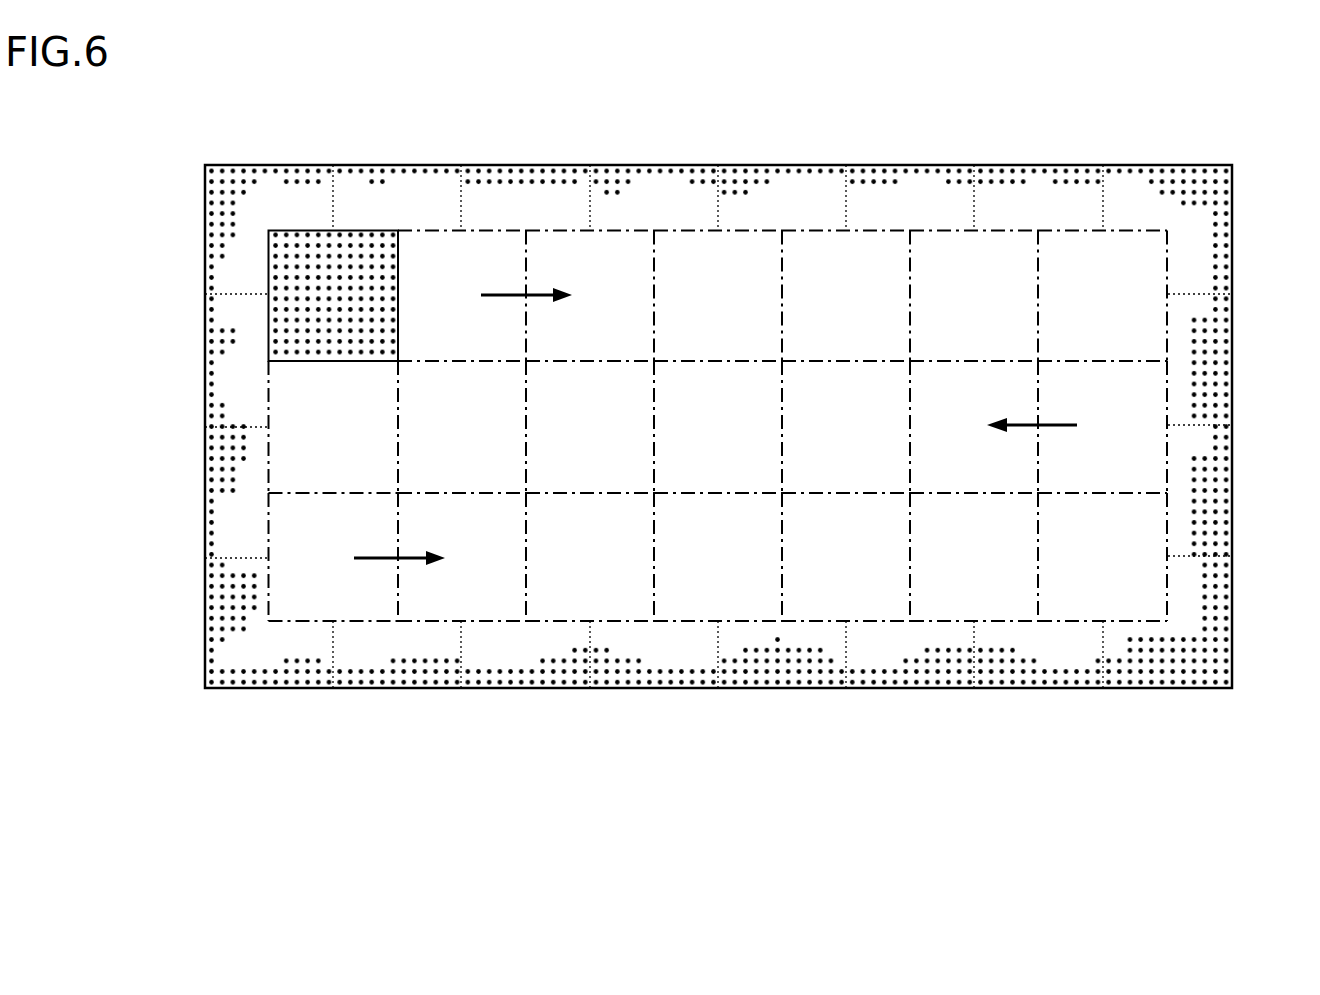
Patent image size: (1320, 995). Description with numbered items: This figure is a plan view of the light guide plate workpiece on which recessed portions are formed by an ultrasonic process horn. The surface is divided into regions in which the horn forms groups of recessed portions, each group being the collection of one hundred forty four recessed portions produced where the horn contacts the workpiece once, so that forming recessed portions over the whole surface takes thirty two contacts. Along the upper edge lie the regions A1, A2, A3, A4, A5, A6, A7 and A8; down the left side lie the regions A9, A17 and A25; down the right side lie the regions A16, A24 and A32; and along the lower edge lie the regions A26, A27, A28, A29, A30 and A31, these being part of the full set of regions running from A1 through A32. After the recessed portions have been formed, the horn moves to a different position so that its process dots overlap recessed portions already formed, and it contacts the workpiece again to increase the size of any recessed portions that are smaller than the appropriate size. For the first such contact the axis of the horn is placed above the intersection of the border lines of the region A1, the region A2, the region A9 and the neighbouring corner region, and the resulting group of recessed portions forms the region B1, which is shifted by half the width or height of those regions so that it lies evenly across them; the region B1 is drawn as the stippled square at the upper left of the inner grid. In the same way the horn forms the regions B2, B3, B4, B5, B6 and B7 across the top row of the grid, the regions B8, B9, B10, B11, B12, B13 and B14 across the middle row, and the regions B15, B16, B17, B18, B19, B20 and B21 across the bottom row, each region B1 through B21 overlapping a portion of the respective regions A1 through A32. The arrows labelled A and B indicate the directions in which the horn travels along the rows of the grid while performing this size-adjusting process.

The region A1 is at (272, 165).
The region A2 is at (400, 165).
The region A3 is at (528, 165).
The region A4 is at (656, 165).
The region A5 is at (784, 165).
The region A6 is at (912, 165).
The region A7 is at (1040, 165).
The region A8 is at (1168, 165).
The region A9 is at (205, 359).
The region A16 is at (1232, 359).
The region A17 is at (205, 491).
The region A24 is at (1232, 492).
The region A25 is at (205, 621).
The region A26 is at (398, 688).
The region A27 is at (526, 688).
The region A28 is at (654, 688).
The region A29 is at (782, 688).
The region A30 is at (910, 688).
The region A31 is at (1038, 688).
The region A32 is at (1232, 621).
The region B1 is at (318, 231).
The region B2 is at (447, 232).
The region B3 is at (575, 232).
The region B4 is at (703, 232).
The region B5 is at (831, 232).
The region B6 is at (959, 232).
The region B7 is at (1087, 232).
The region B8 is at (287, 406).
The region B9 is at (416, 406).
The region B10 is at (544, 406).
The region B11 is at (672, 406).
The region B12 is at (800, 406).
The region B13 is at (928, 406).
The region B14 is at (1056, 406).
The region B15 is at (287, 538).
The region B16 is at (416, 538).
The region B17 is at (544, 538).
The region B18 is at (672, 538).
The region B19 is at (800, 538).
The region B20 is at (928, 538).
The region B21 is at (1056, 538).
The scanning direction A is at (509, 294).
The scanning direction B is at (1056, 430).